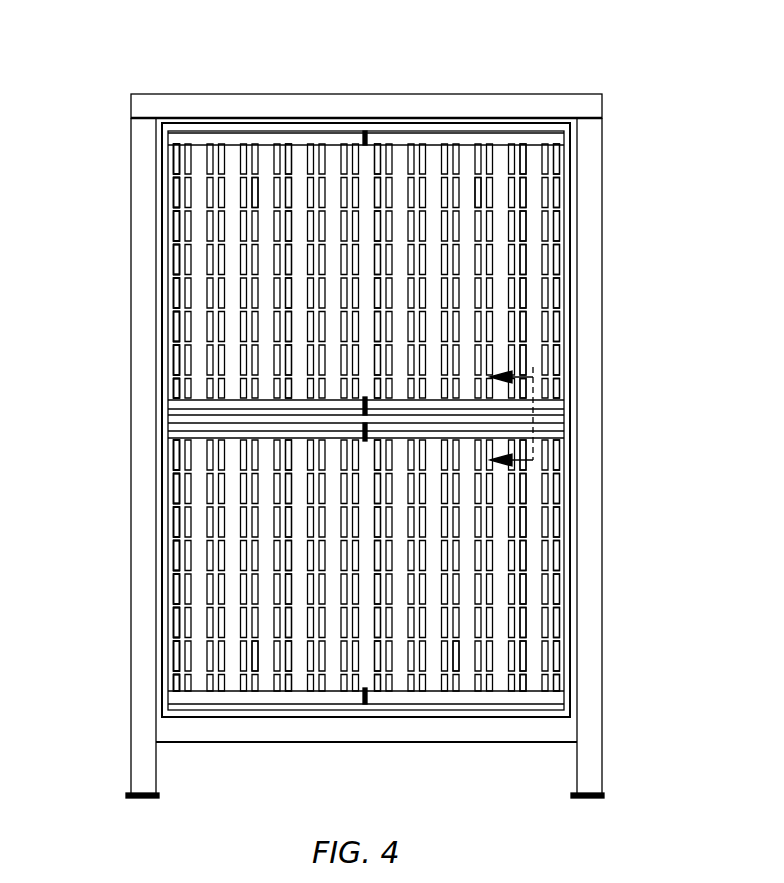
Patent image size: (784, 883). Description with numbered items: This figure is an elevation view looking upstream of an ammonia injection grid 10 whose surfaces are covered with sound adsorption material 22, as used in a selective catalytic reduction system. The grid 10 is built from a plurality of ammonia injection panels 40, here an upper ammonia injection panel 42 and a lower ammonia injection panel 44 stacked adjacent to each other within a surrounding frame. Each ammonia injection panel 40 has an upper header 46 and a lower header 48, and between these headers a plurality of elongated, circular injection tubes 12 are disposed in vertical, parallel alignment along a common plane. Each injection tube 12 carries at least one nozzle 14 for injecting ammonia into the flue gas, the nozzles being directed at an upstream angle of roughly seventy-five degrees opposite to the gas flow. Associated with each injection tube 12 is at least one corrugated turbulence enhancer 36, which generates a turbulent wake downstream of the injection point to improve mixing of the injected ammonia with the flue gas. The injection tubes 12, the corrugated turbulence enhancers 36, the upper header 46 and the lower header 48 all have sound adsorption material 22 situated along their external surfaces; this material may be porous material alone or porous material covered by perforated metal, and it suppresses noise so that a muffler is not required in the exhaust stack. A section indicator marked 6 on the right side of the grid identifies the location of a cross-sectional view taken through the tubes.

The ammonia injection grid 10 is at (646, 83).
The injection tube 12 is at (632, 575).
The nozzle 14 is at (130, 422).
The sound adsorption material 22 is at (184, 230).
The corrugated turbulence enhancer 36 is at (628, 493).
The ammonia injection panel 40 is at (176, 585).
The upper ammonia injection panel 42 is at (266, 185).
The lower ammonia injection panel 44 is at (263, 656).
The upper header 46 is at (426, 135).
The lower header 48 is at (440, 777).
The section line of FIG. 6 is at (511, 413).